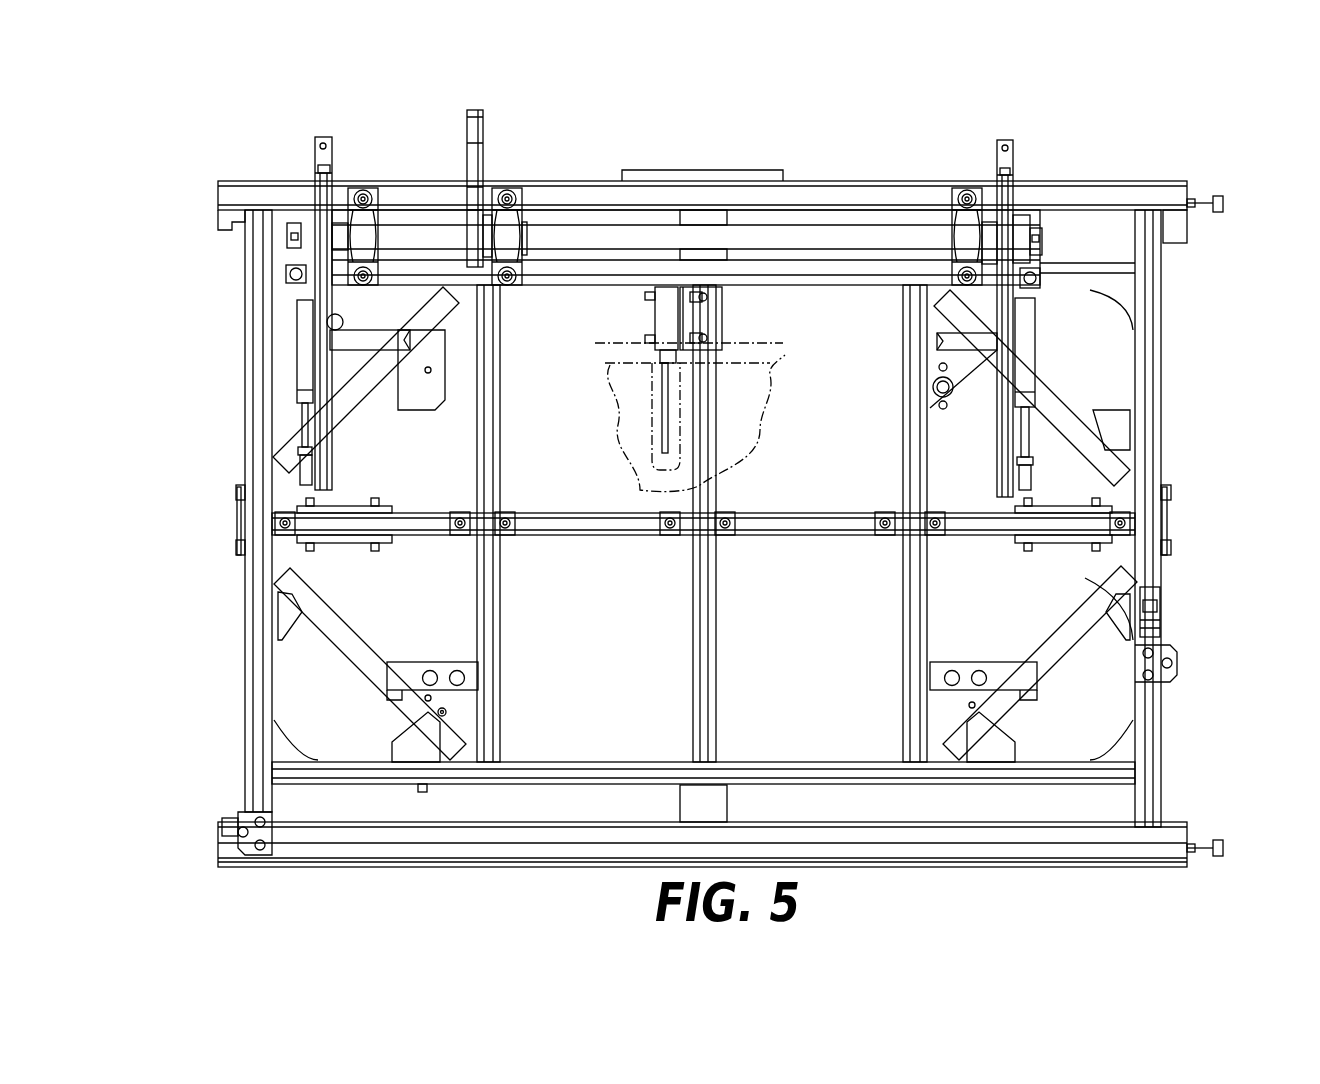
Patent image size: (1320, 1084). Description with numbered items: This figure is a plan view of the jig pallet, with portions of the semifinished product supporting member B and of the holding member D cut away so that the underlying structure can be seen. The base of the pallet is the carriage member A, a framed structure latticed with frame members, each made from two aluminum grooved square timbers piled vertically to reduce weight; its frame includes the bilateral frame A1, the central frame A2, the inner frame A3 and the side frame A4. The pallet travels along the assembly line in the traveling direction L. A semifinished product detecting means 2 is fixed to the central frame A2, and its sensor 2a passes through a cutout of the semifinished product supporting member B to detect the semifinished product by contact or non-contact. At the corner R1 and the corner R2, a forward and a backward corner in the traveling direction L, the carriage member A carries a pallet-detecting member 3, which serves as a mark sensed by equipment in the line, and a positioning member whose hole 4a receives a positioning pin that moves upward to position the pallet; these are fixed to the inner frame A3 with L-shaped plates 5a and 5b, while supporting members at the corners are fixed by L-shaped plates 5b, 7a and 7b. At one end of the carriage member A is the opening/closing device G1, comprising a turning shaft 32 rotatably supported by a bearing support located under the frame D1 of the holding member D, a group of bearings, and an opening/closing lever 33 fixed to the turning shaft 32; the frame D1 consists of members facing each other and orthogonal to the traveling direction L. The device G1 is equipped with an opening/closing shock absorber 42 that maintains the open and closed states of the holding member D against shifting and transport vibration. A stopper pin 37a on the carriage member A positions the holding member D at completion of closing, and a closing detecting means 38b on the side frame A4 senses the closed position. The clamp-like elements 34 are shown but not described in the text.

The semifinished product detecting means 2 is at (655, 320).
The sensor 2a is at (667, 410).
The pallet-detecting member 3 is at (385, 345).
The hole 4a is at (945, 395).
The L-shaped plate 5a is at (975, 388).
The L-shaped plate 5b is at (430, 385).
The L-shaped plate 7a is at (970, 695).
The L-shaped plate 7b is at (440, 685).
The turning shaft 32 is at (590, 235).
The opening/closing lever 33 is at (476, 163).
The clamp 34 is at (365, 220).
The stopper pin 37a is at (1172, 662).
The closing detecting means 38b is at (1160, 612).
The opening/closing shock absorber 42 is at (303, 375).
The carriage member A is at (1183, 527).
The bilateral frame A1 is at (1046, 198).
The central frame A2 is at (716, 650).
The inner frame A3 is at (905, 290).
The side frame A4 is at (245, 645).
The semifinished product supporting member B is at (795, 370).
The holding member D is at (313, 220).
The frame D1 is at (318, 248).
The opening/closing device G1 is at (446, 170).
The traveling direction L is at (226, 517).
The corner R1 is at (1064, 326).
The corner R2 is at (295, 345).